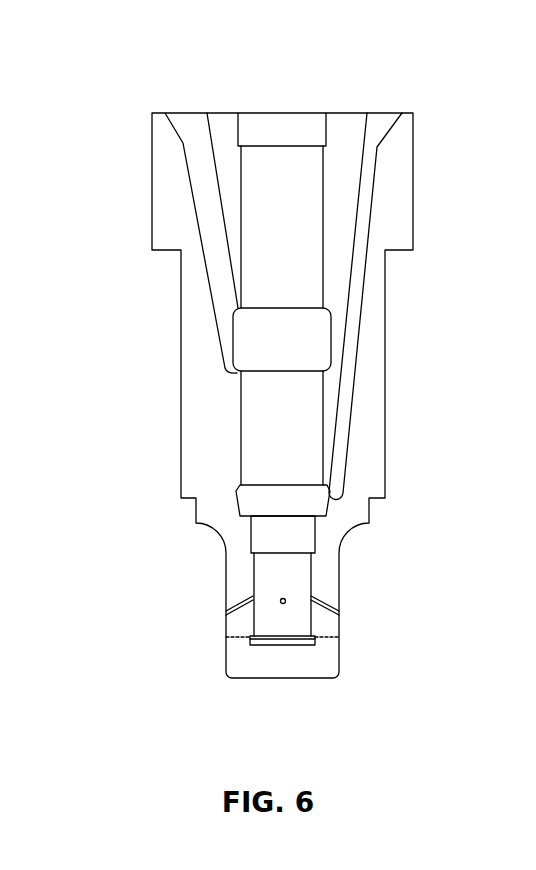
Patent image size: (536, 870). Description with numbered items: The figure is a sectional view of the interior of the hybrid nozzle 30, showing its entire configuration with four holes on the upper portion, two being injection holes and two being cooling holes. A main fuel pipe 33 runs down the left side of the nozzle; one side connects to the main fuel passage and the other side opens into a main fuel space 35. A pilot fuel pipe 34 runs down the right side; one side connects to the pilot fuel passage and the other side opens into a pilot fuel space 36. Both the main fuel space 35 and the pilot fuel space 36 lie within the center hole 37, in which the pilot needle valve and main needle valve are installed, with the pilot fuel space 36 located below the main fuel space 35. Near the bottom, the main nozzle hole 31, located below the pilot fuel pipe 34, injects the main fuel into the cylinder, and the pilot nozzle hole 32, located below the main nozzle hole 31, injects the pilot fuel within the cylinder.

The hybrid nozzle 30 is at (158, 102).
The main nozzle hole 31 is at (233, 609).
The pilot nozzle hole 32 is at (315, 637).
The main fuel pipe 33 is at (202, 203).
The pilot fuel pipe 34 is at (350, 413).
The main fuel space 35 is at (320, 333).
The pilot fuel space 36 is at (240, 492).
The center hole 37 is at (257, 403).